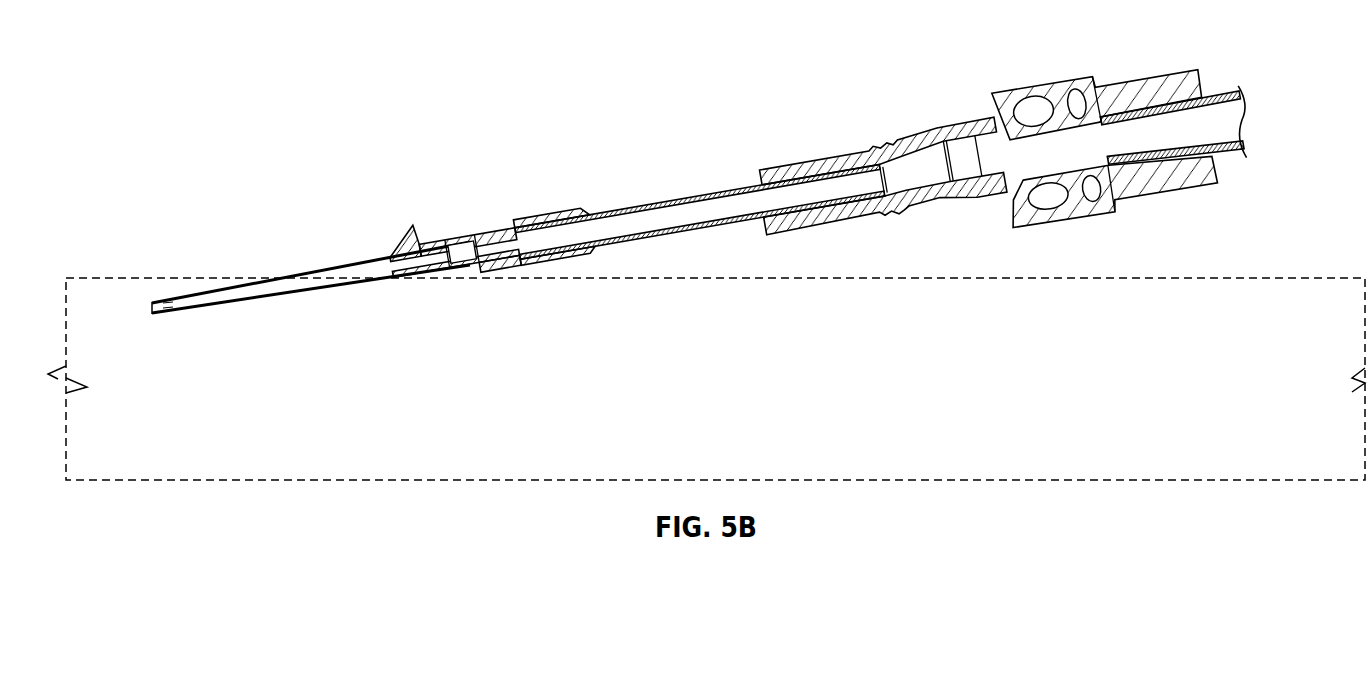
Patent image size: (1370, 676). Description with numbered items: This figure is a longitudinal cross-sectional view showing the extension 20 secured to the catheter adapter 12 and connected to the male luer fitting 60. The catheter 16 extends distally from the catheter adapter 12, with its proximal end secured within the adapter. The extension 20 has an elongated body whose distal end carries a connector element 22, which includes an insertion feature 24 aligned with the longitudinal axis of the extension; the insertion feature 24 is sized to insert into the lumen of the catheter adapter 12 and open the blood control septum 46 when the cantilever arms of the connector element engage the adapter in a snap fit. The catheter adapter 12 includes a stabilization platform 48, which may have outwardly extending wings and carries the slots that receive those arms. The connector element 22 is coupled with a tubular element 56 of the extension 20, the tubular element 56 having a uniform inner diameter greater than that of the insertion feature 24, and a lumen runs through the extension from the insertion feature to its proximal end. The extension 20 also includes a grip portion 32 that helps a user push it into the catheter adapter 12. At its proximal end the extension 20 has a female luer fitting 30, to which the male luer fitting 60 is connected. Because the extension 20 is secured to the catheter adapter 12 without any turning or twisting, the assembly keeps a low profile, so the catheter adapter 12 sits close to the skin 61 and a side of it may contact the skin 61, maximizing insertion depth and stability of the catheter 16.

The catheter adapter 12 is at (400, 180).
The catheter 16 is at (213, 310).
The extension 20 is at (643, 178).
The connector element 22 is at (548, 202).
The insertion feature 24 is at (478, 243).
The female luer fitting 30 is at (992, 215).
The grip portion 32 is at (872, 135).
The blood control septum 46 is at (523, 258).
The stabilization platform 48 is at (564, 258).
The tubular element 56 is at (690, 226).
The male luer fitting 60 is at (1160, 93).
The skin 61 is at (697, 389).